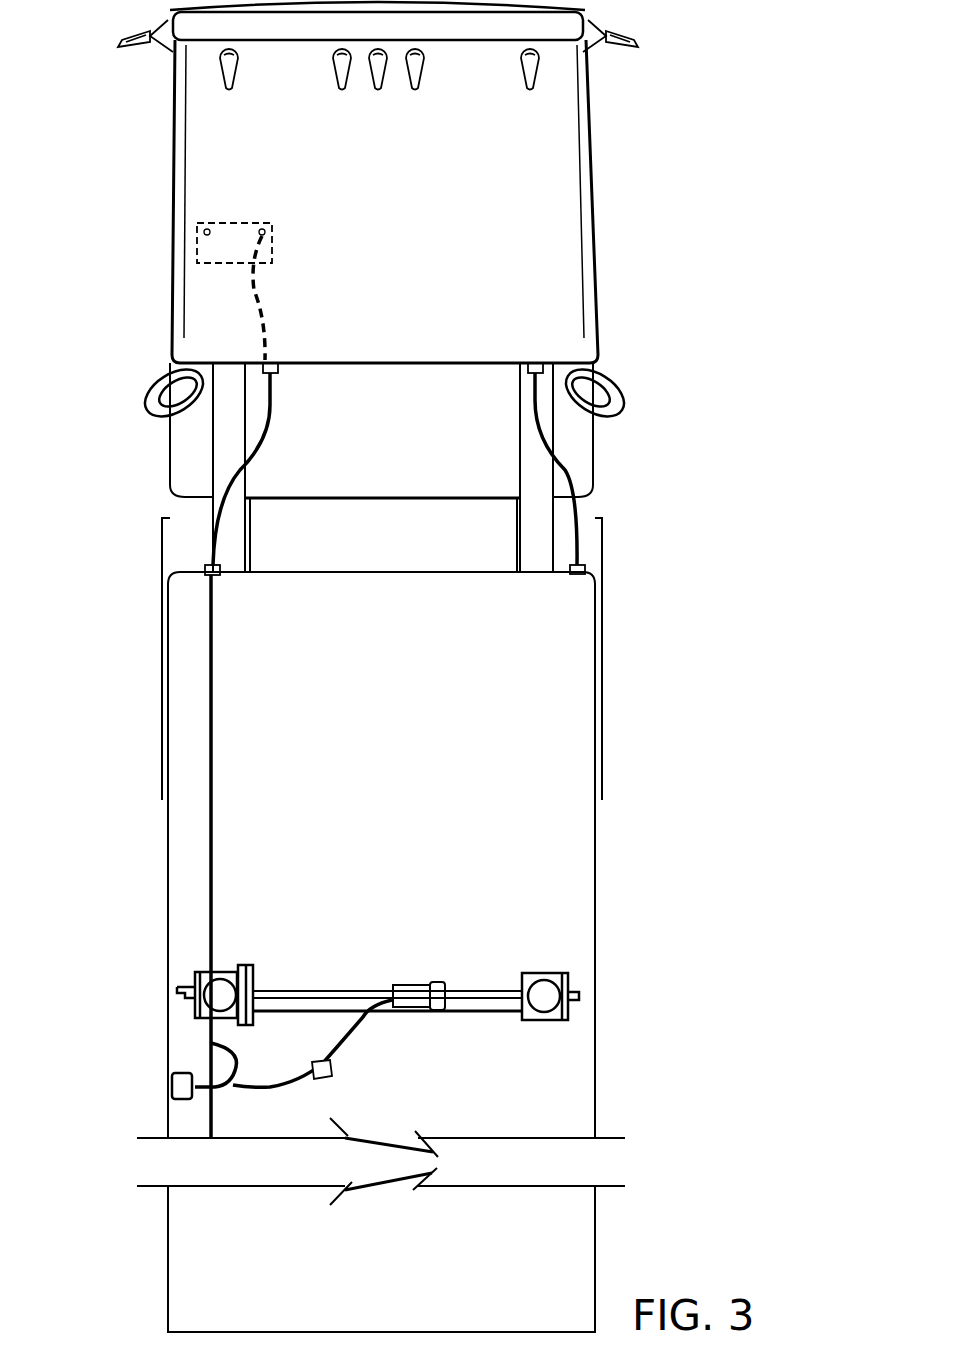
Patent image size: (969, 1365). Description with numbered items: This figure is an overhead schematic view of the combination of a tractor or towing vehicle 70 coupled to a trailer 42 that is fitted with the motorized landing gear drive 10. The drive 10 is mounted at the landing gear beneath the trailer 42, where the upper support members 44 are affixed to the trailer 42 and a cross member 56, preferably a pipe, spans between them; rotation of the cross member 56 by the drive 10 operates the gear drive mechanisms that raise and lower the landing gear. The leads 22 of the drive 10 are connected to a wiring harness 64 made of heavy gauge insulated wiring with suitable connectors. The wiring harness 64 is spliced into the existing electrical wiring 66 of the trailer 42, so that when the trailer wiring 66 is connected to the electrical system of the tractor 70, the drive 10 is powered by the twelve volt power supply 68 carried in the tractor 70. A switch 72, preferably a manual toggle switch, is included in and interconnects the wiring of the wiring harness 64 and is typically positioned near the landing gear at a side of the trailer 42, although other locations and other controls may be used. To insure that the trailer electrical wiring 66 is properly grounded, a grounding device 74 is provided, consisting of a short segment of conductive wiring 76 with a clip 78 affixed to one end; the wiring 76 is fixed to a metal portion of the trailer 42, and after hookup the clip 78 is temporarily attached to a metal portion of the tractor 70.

The drive 10 is at (453, 982).
The leads 22 is at (350, 1033).
The trailer 42 is at (583, 647).
The upper support member 44 is at (198, 1007).
The cross member 56 is at (493, 998).
The wiring harness 64 is at (293, 1085).
The electrical wiring 66 is at (208, 733).
The power supply 68 is at (233, 222).
The tractor 70 is at (198, 173).
The switch 72 is at (173, 1078).
The grounding device 74 is at (582, 545).
The conductive wiring 76 is at (585, 567).
The clip 78 is at (537, 362).